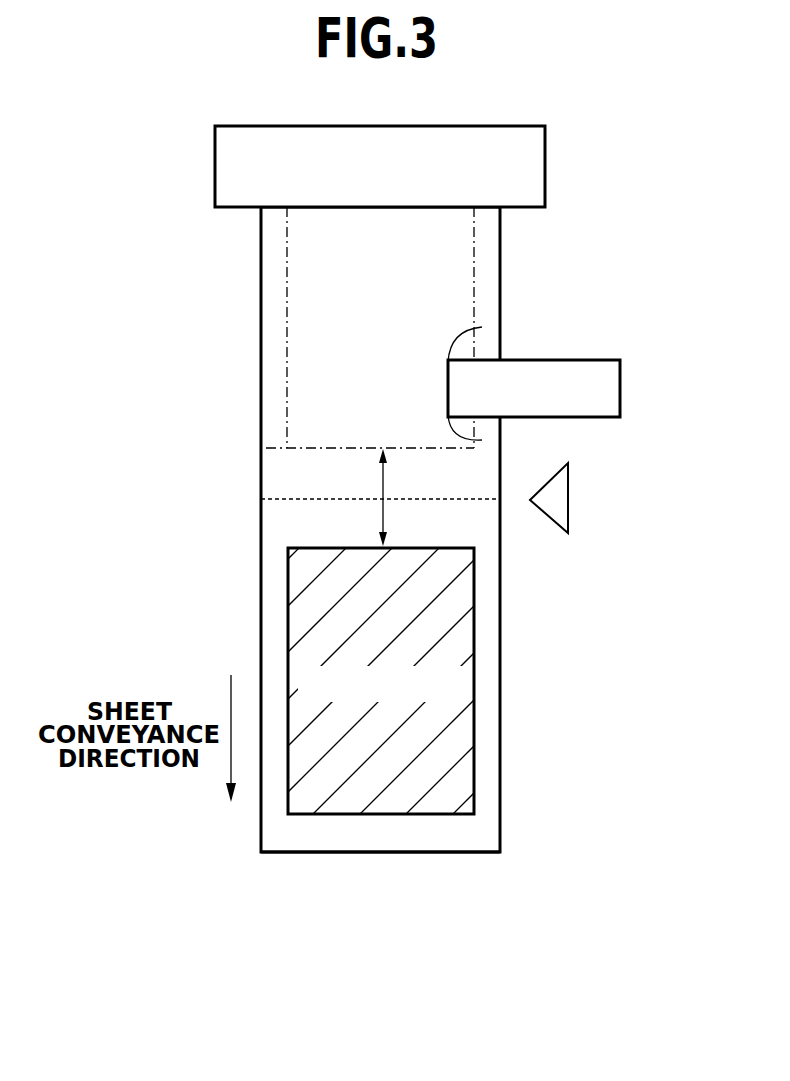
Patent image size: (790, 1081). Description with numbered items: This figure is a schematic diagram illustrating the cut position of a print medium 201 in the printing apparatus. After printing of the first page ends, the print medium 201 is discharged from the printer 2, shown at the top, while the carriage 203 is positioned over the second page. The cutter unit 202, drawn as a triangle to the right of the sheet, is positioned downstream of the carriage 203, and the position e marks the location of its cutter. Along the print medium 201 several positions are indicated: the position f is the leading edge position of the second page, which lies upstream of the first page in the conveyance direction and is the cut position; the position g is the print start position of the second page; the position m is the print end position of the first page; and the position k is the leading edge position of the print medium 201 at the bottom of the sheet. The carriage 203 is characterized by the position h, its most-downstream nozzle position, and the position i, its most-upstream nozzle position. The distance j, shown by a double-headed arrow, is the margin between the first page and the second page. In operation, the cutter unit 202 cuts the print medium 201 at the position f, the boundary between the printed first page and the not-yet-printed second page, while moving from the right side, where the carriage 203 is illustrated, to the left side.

The printer 2 is at (546, 170).
The print medium 201 is at (366, 853).
The cutter unit 202 is at (569, 498).
The carriage 203 is at (621, 388).
The print start position of the second page g is at (270, 448).
The leading edge position of the second page f is at (261, 499).
The print end position of the first page m is at (275, 548).
The margin between the first page and the second page j is at (391, 497).
The most-upstream nozzle position of the carriage i is at (482, 327).
The most-downstream nozzle position of the carriage h is at (482, 440).
The position of the cutter e is at (530, 502).
The leading edge position of the print medium k is at (501, 852).